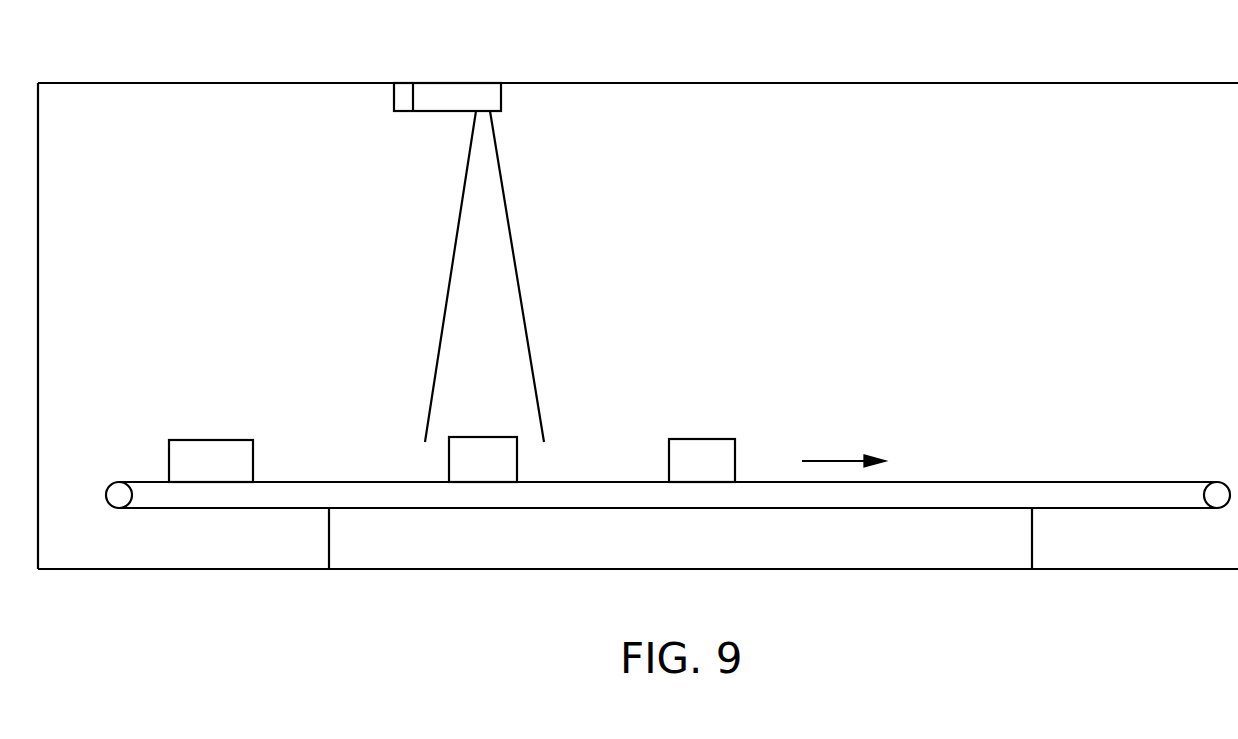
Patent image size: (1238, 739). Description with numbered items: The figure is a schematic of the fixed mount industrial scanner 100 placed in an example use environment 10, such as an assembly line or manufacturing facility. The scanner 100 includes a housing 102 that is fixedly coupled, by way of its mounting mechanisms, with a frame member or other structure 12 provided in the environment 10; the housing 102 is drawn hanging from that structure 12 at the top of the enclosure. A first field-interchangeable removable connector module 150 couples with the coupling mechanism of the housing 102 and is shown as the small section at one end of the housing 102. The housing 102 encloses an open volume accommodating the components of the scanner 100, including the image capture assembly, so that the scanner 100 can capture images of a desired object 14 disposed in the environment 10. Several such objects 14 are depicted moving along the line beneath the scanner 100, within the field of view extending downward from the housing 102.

The environment 10 is at (983, 194).
The frame member or other structure 12 is at (660, 82).
The object 14 is at (227, 474).
The fixed mount industrial scanner 100 is at (495, 94).
The housing 102 is at (470, 90).
The first field-interchangeable removable connector module 150 is at (405, 90).